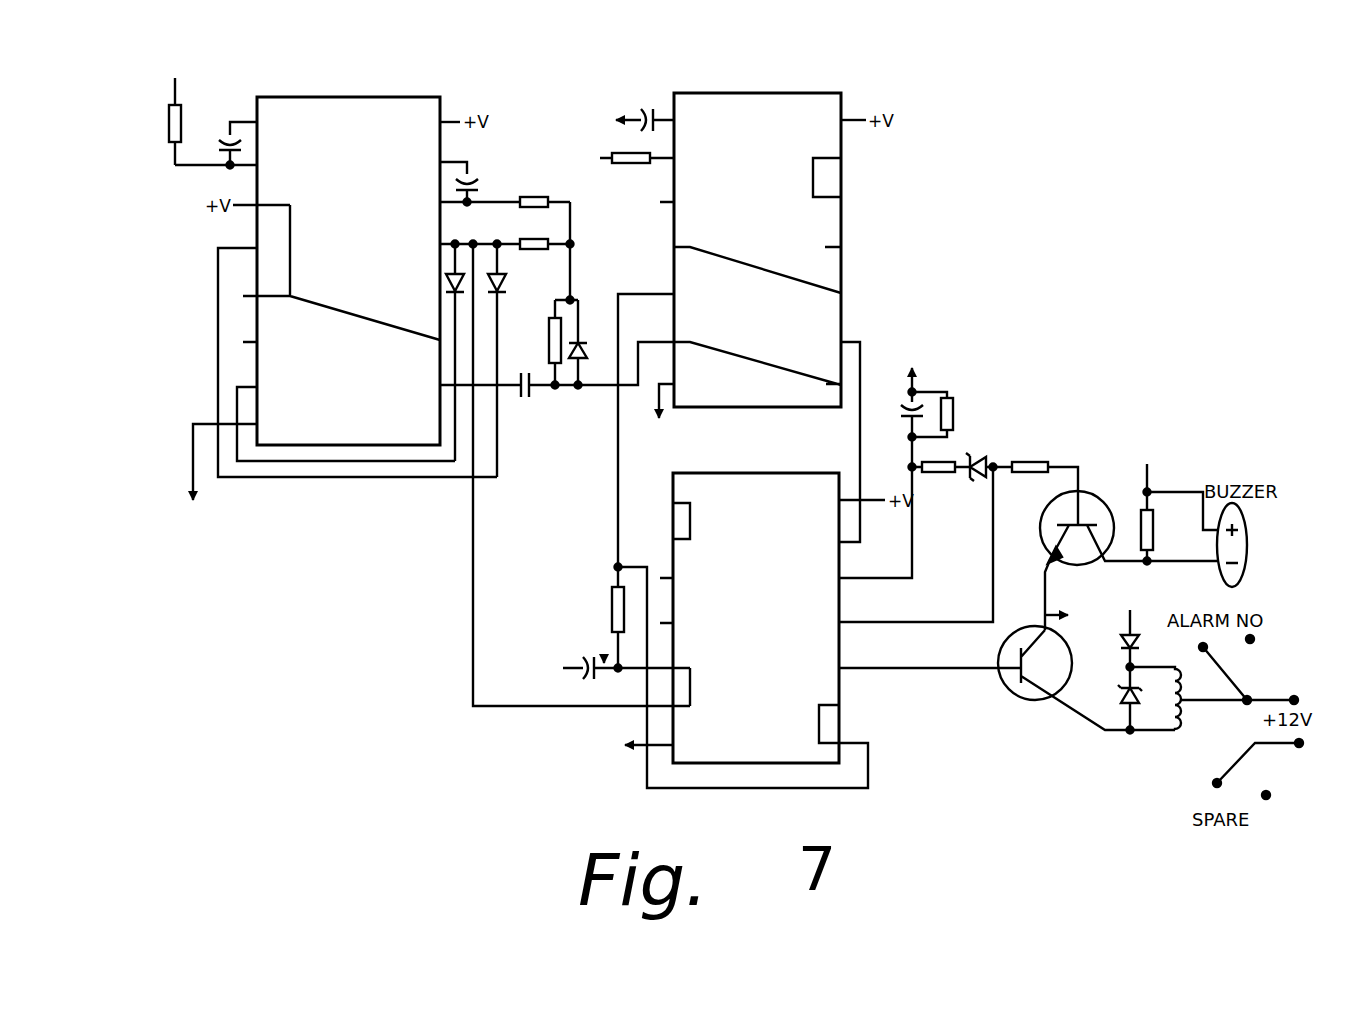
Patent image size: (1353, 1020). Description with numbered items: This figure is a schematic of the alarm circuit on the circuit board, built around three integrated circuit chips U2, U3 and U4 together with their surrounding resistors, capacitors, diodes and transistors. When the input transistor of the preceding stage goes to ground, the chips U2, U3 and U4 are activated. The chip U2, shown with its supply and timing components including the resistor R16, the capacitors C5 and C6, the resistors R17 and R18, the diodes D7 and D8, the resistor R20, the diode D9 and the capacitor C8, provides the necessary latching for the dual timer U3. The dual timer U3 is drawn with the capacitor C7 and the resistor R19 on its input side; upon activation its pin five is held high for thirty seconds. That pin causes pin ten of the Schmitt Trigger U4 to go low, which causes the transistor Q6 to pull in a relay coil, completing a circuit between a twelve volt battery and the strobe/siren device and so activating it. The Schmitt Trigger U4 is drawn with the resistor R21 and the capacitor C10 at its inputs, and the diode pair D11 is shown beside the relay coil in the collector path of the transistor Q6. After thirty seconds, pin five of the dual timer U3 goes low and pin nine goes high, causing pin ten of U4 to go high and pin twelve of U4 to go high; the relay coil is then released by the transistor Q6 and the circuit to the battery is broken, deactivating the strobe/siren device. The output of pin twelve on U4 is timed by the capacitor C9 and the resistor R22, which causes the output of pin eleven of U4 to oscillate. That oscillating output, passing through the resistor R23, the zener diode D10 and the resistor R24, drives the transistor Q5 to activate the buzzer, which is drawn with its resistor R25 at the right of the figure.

The integrated circuit chip U2 is at (341, 271).
The dual timer U3 is at (750, 250).
The Schmitt Trigger U4 is at (749, 618).
The resistor R16 is at (159, 111).
The resistor R17 is at (520, 193).
The resistor R18 is at (507, 233).
The resistor R19 is at (622, 168).
The resistor R20 is at (541, 343).
The resistor R21 is at (629, 618).
The timing resistor R22 is at (951, 414).
The resistor R23 is at (940, 479).
The resistor R24 is at (1035, 465).
The resistor R25 is at (1172, 505).
The capacitor C5 is at (233, 134).
The capacitor C6 is at (471, 183).
The capacitor C7 is at (645, 112).
The capacitor C8 is at (557, 383).
The timing capacitor C9 is at (908, 388).
The capacitor C10 is at (590, 681).
The diode D7 is at (459, 341).
The diode D8 is at (510, 359).
The diode D9 is at (589, 344).
The zener diode D10 is at (982, 456).
The diode pair D11 is at (1112, 662).
The transistor Q5 is at (1128, 560).
The transistor Q6 is at (1086, 678).